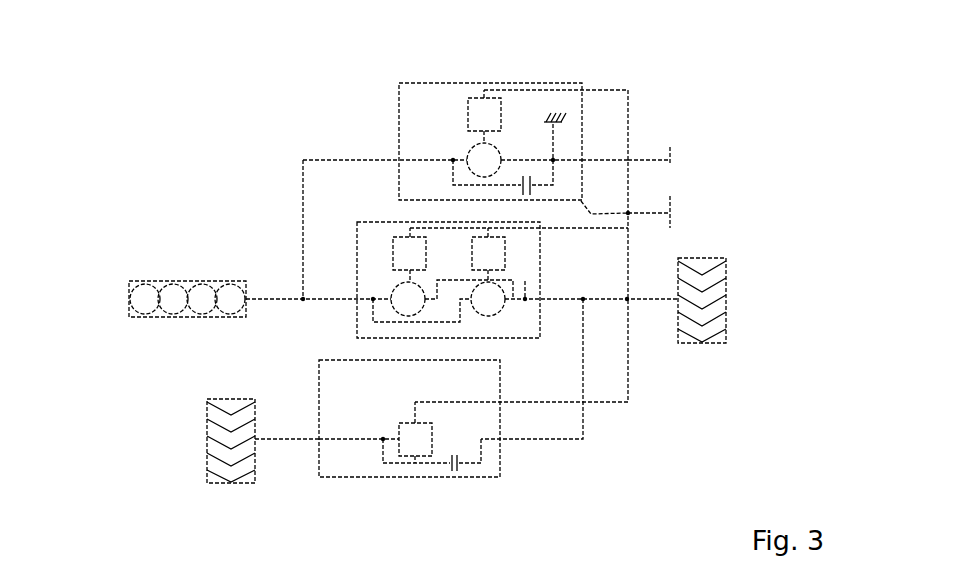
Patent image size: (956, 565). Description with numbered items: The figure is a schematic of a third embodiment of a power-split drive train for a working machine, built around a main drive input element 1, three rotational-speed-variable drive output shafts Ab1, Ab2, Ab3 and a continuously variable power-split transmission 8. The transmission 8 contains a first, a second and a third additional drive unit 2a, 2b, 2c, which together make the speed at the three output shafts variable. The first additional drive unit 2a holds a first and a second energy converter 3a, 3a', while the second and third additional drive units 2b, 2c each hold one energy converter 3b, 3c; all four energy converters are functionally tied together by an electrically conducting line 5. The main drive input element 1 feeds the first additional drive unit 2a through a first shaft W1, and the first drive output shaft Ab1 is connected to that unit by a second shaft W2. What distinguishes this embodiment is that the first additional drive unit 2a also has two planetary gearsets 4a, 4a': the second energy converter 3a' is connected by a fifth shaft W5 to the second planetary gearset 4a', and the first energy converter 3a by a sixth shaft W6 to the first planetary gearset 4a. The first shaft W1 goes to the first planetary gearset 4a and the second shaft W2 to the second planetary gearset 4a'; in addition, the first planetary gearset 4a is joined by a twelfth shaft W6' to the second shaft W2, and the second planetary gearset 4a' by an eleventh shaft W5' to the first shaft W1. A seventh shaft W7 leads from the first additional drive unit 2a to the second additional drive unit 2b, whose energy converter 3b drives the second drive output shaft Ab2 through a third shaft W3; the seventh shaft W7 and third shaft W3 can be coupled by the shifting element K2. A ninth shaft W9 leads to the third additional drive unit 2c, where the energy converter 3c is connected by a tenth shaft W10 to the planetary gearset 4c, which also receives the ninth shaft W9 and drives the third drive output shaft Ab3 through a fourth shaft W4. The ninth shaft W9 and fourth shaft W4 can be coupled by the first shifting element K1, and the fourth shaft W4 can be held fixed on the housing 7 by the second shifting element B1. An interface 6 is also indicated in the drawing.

The main drive input element 1 is at (121, 280).
The first additional drive unit 2a is at (380, 226).
The second additional drive unit 2b is at (416, 457).
The third additional drive unit 2c is at (398, 152).
The first energy converter of the first additional drive unit 3a is at (235, 218).
The second energy converter of the first additional drive unit 3a' is at (646, 240).
The energy converter of the second additional drive unit 3b is at (415, 452).
The energy converter of the third additional drive unit 3c is at (480, 105).
The first planetary gearset of the first additional drive unit 4a is at (234, 324).
The second planetary gearset of the first additional drive unit 4a' is at (520, 418).
The planetary gearset of the third additional drive unit 4c is at (466, 153).
The electric line 5 is at (598, 88).
The interface 6 is at (692, 189).
The housing 7 is at (547, 108).
The continuously variable power-split transmission 8 is at (713, 97).
The second shifting element of the third additional drive unit B1 is at (537, 121).
The first shifting element of the third additional drive unit K1 is at (630, 212).
The shifting element of the second additional drive unit K2 is at (455, 481).
The first shaft W1 is at (214, 319).
The second shaft W2 is at (663, 378).
The third shaft W3 is at (345, 440).
The fourth shaft W4 is at (628, 85).
The fifth shaft W5 is at (623, 275).
The eleventh shaft W5' is at (251, 354).
The sixth shaft W6 is at (224, 246).
The twelfth shaft W6' is at (557, 412).
The seventh shaft W7 is at (576, 427).
The ninth shaft W9 is at (300, 222).
The tenth shaft W10 is at (480, 150).
The first drive output shaft Ab1 is at (707, 336).
The second drive output shaft Ab2 is at (297, 440).
The third drive output shaft Ab3 is at (678, 88).